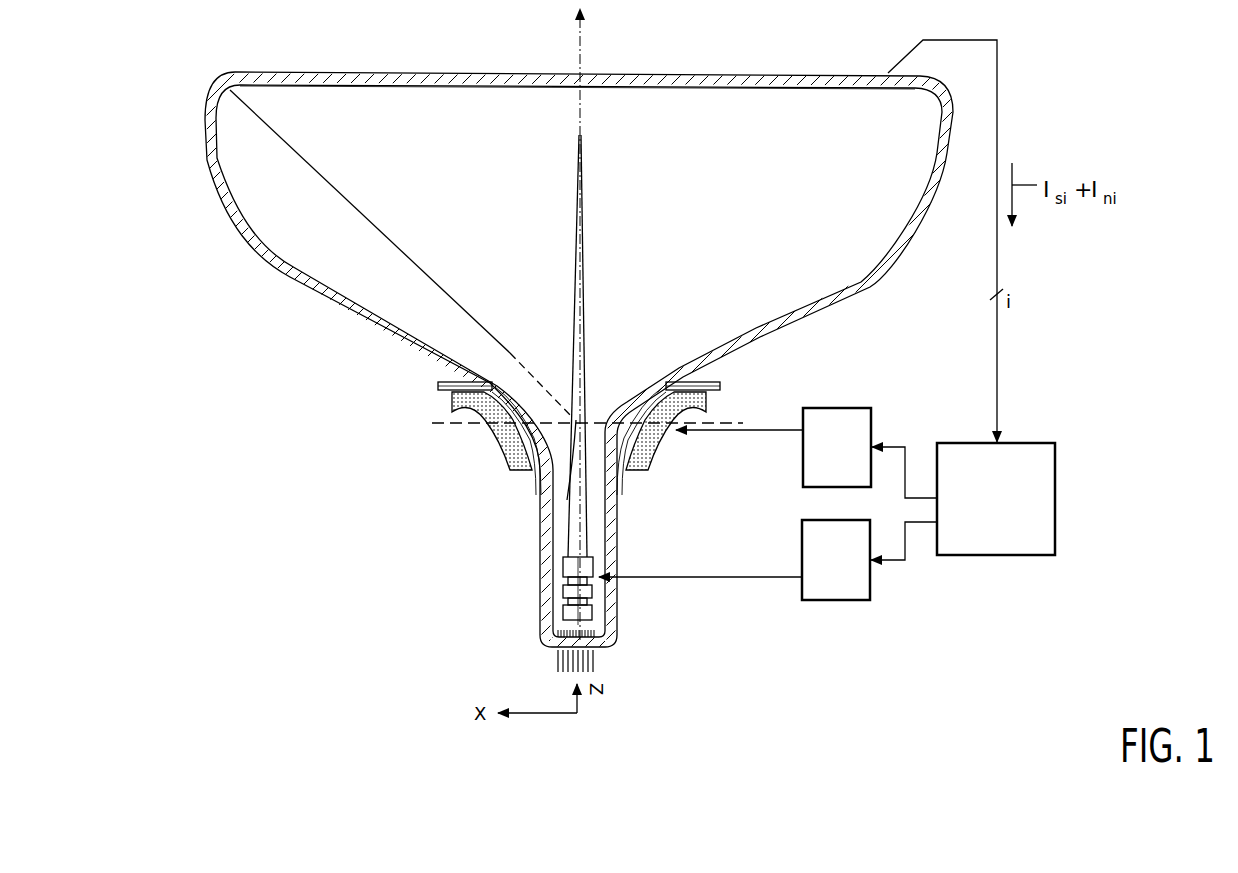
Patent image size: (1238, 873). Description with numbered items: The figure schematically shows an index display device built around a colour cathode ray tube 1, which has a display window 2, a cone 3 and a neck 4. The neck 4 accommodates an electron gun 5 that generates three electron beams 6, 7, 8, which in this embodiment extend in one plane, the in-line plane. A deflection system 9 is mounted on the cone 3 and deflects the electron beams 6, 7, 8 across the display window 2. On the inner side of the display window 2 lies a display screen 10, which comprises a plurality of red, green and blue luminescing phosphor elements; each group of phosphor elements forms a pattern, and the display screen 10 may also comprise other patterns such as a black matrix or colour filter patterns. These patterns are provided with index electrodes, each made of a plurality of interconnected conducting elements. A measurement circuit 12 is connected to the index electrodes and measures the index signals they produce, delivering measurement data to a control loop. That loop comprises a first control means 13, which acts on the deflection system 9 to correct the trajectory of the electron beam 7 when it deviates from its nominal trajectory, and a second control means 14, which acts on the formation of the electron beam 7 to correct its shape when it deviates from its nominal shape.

The colour cathode ray tube 1 is at (203, 84).
The display window 2 is at (720, 80).
The cone 3 is at (826, 305).
The neck 4 is at (612, 600).
The electron gun 5 is at (568, 568).
The electron beam 6 is at (574, 285).
The electron beam 7 is at (574, 322).
The electron beam 8 is at (578, 350).
The deflection system 9 is at (643, 459).
The display screen 10 is at (676, 82).
The measurement circuit 12 is at (963, 300).
The first control means 13 is at (773, 447).
The second control means 14 is at (734, 560).